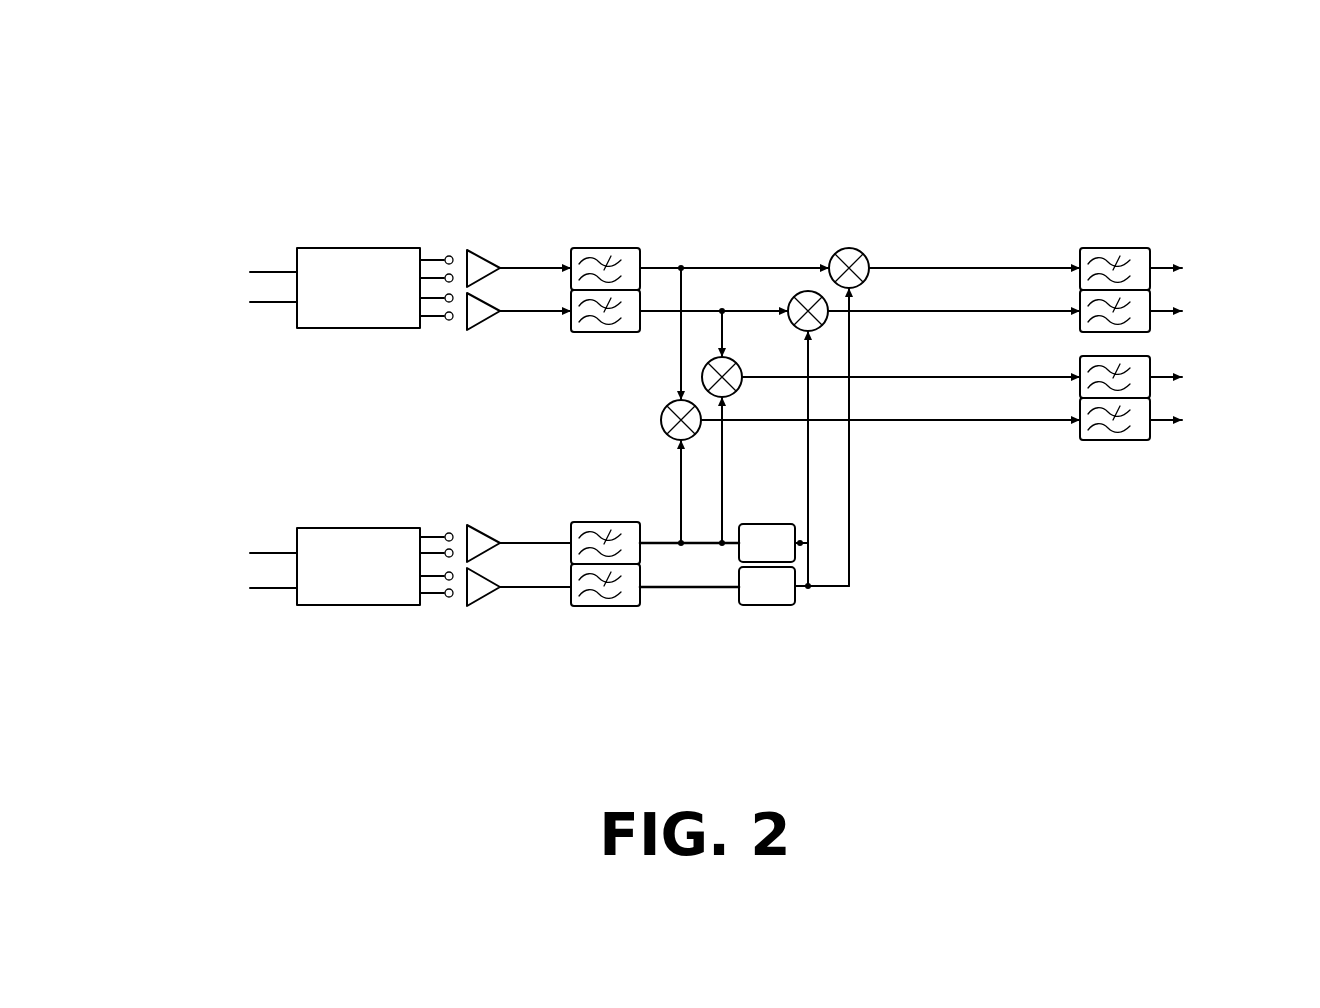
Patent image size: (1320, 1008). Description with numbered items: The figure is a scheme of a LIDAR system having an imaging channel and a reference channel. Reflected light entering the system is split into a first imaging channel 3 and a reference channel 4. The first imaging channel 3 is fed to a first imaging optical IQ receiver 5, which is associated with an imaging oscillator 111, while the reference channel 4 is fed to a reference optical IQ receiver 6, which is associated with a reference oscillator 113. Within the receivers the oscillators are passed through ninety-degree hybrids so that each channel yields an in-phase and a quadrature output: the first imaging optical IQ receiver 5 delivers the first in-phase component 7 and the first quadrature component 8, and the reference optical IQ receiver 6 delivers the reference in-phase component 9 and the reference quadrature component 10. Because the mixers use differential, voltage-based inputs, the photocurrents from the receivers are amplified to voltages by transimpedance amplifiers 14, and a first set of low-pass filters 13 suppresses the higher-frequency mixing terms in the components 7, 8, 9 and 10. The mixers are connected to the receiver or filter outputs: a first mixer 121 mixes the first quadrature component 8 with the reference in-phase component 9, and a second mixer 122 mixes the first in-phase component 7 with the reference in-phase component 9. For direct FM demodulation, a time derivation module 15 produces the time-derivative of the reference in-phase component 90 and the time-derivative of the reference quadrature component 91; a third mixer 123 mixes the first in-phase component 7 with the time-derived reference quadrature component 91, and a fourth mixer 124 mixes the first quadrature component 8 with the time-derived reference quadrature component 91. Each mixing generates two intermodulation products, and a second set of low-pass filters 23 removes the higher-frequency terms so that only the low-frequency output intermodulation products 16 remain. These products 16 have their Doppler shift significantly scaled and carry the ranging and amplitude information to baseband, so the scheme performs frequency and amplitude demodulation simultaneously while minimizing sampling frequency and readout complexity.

The first imaging channel 3 is at (257, 272).
The imaging oscillator 111 is at (257, 303).
The first imaging optical IQ receiver 5 is at (330, 248).
The first in-phase component 7 is at (443, 258).
The first quadrature component 8 is at (455, 296).
The transimpedance amplifier 14 is at (492, 308).
The first set of low-pass filters 13 is at (632, 288).
The second mixer 122 is at (687, 330).
The first mixer 121 is at (733, 357).
The fourth mixer 124 is at (809, 291).
The third mixer 123 is at (858, 253).
The second set of low-pass filters 23 is at (1140, 290).
The output intermodulation product 16 is at (1224, 344).
The reference channel 4 is at (263, 550).
The reference oscillator 113 is at (258, 588).
The reference optical IQ receiver 6 is at (343, 605).
The reference in-phase component 9 is at (440, 538).
The reference quadrature component 10 is at (442, 584).
The time derivation module 15 is at (745, 552).
The time-derivative of the reference in-phase component 90 is at (808, 550).
The time-derivative of the reference quadrature component 91 is at (798, 588).